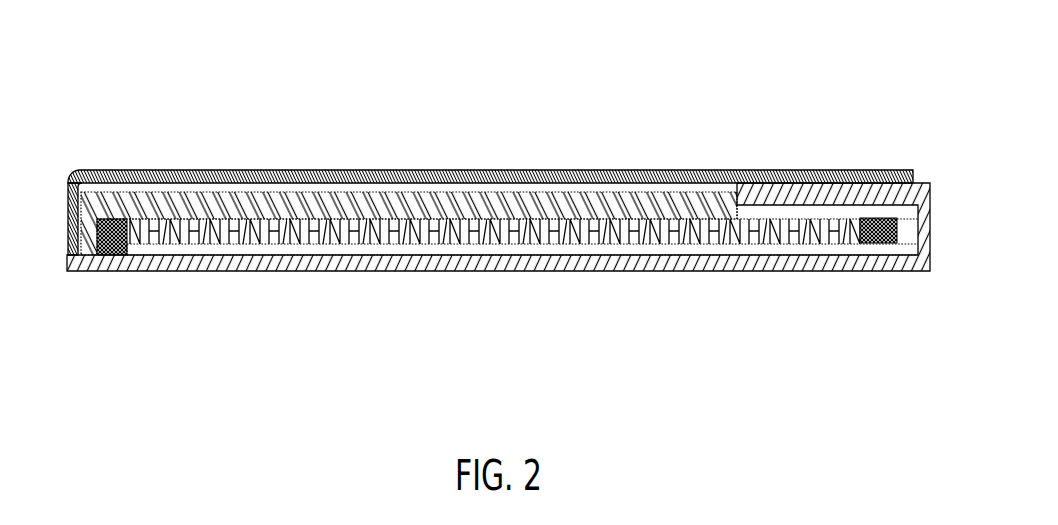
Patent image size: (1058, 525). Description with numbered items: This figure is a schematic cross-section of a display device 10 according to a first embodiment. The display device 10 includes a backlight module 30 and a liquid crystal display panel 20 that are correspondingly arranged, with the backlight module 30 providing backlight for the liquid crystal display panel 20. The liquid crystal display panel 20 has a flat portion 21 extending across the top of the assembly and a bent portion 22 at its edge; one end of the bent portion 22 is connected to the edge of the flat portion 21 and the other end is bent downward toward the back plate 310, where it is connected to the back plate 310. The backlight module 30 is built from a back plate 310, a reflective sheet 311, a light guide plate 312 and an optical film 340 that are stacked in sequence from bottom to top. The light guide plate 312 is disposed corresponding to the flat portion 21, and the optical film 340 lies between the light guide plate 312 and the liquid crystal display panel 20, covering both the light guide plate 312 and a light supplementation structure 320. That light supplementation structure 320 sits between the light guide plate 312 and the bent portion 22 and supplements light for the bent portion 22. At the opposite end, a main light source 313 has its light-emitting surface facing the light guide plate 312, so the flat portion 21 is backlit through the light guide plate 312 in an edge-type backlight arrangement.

The display device 10 is at (177, 53).
The liquid crystal display panel 20 is at (412, 103).
The flat portion 21 is at (385, 175).
The bent portion 22 is at (72, 212).
The backlight module 30 is at (718, 365).
The back plate 310 is at (562, 258).
The reflective sheet 311 is at (197, 248).
The light guide plate 312 is at (297, 232).
The main light source 313 is at (877, 228).
The light supplementation structure 320 is at (113, 250).
The optical film 340 is at (420, 210).